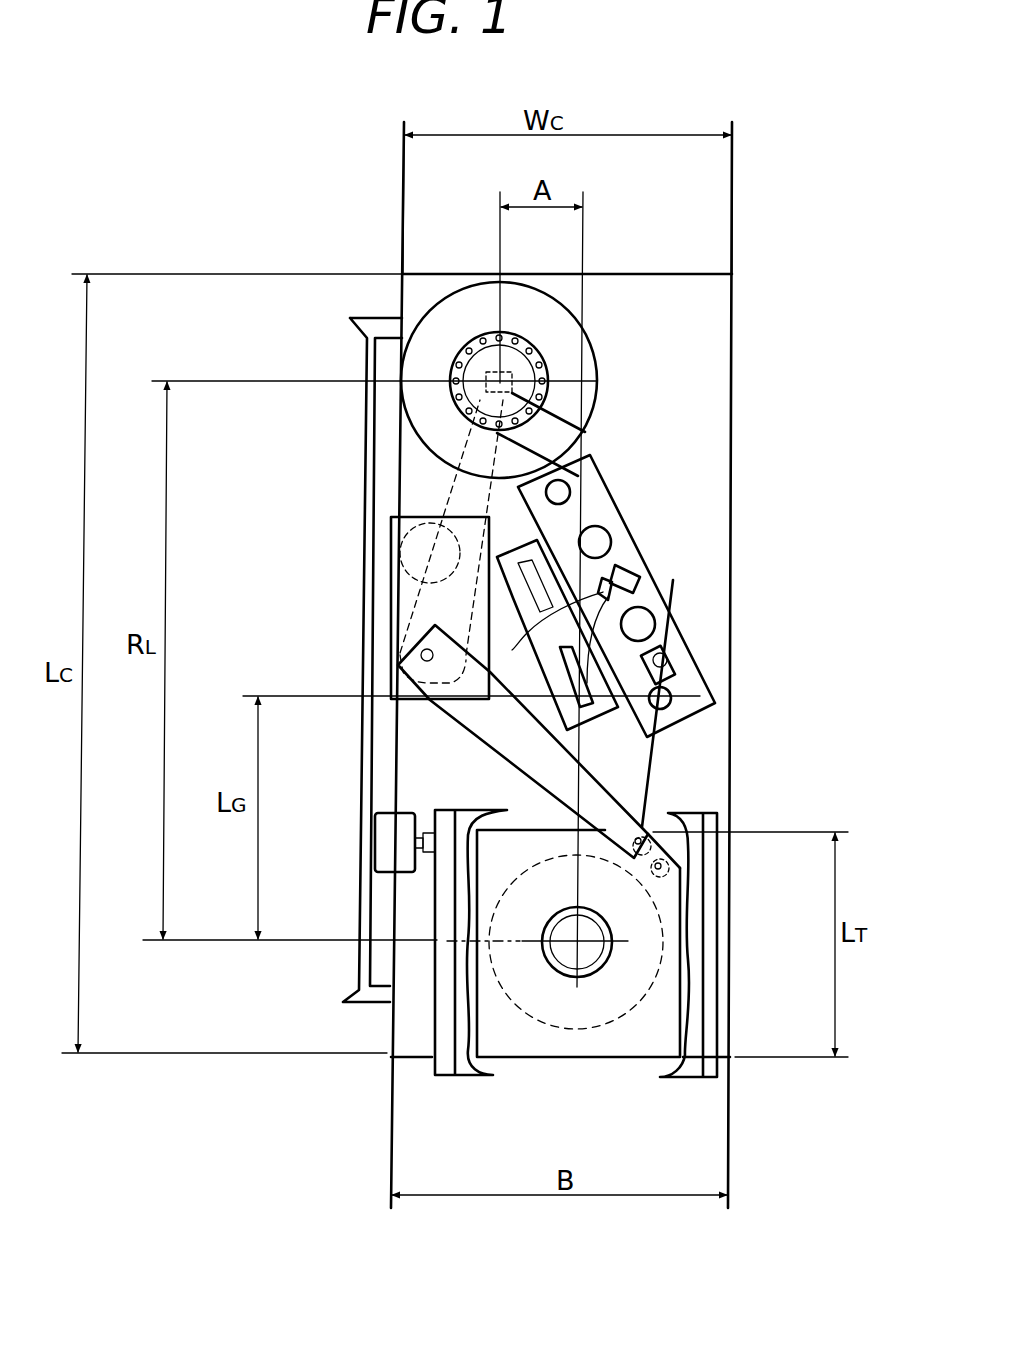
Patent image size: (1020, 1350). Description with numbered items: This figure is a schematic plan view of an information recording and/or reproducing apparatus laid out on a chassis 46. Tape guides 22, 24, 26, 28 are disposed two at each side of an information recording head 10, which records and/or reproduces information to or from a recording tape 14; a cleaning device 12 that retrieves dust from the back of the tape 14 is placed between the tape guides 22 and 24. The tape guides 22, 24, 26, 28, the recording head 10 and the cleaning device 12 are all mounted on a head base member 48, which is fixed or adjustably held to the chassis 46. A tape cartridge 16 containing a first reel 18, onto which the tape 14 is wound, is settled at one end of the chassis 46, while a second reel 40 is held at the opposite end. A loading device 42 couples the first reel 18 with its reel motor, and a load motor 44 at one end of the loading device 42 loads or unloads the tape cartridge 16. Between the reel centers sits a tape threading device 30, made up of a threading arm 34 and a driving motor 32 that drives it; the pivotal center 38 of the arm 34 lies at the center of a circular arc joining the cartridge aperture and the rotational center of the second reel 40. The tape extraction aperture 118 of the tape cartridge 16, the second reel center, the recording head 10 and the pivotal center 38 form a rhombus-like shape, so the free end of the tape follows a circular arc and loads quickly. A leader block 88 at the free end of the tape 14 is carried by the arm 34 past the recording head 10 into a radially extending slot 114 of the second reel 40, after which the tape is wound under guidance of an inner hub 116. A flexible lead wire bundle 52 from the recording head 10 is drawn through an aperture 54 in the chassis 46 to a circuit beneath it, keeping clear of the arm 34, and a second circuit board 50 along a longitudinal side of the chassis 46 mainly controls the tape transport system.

The information recording head 10 is at (641, 580).
The cleaning device 12 is at (668, 661).
The recording tape 14 is at (668, 752).
The tape cartridge 16 is at (615, 1048).
The first reel 18 is at (548, 1013).
The tape guide 22 is at (656, 623).
The tape guide 24 is at (672, 710).
The tape guide 26 is at (606, 541).
The tape guide 28 is at (562, 492).
The tape threading device 30 is at (296, 533).
The driving motor 32 is at (392, 556).
The threading arm 34 is at (396, 686).
The pivotal center 38 is at (418, 652).
The second reel 40 is at (557, 310).
The loading device 42 is at (440, 927).
The load motor 44 is at (385, 842).
The chassis 46 is at (733, 373).
The head base member 48 is at (590, 455).
The second circuit board 50 is at (367, 432).
The flexible lead wire bundle 52 is at (525, 640).
The aperture 54 is at (612, 712).
The leader block 88 is at (683, 862).
The radially extending slot 114 is at (563, 393).
The inner hub 116 is at (547, 362).
The tape extraction aperture 118 is at (650, 836).